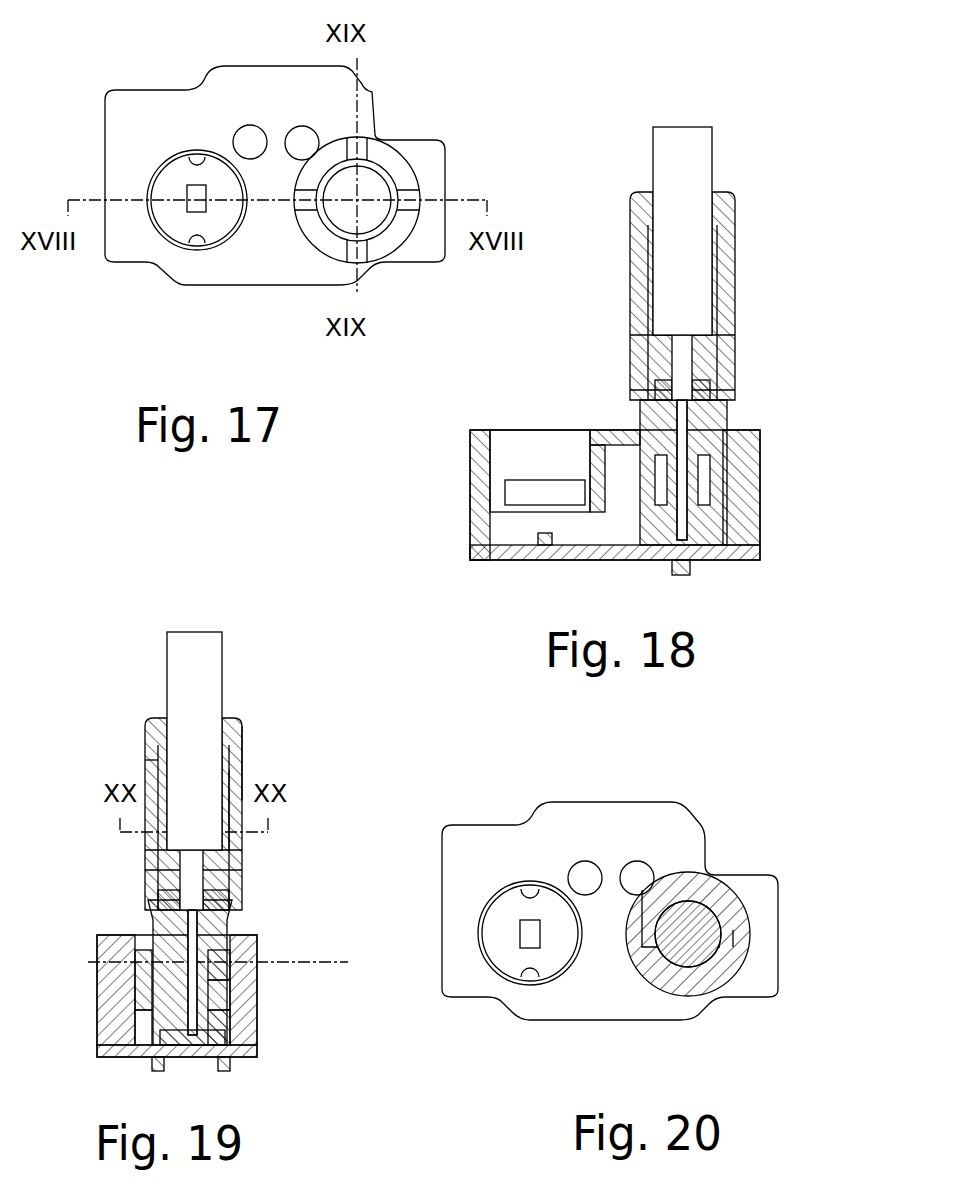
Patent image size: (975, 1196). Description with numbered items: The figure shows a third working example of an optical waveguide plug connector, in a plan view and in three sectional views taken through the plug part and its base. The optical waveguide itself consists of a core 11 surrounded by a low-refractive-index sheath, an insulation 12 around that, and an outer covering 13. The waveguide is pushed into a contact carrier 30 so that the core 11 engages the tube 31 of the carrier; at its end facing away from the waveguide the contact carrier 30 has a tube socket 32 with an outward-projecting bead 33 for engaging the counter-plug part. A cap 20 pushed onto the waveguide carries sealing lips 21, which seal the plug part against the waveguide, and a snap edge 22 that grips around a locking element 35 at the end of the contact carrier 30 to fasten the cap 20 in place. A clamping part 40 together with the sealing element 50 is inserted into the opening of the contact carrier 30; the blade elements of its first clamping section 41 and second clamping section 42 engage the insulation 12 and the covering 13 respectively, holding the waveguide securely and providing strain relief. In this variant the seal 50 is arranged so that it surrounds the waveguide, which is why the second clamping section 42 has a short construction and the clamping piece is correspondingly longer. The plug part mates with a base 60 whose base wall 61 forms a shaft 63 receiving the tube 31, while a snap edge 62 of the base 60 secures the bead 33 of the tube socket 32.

In FIG. 18, the core 11 is at (645, 412).
In FIG. 19, the core 11 is at (245, 940).
In FIG. 18, the insulation 12 is at (680, 365).
In FIG. 19, the insulation 12 is at (205, 885).
In FIG. 20, the insulation 12 is at (668, 900).
In FIG. 18, the covering 13 is at (683, 150).
In FIG. 19, the covering 13 is at (195, 672).
In FIG. 17, the cap 20 is at (377, 147).
In FIG. 18, the cap 20 is at (630, 207).
In FIG. 19, the cap 20 is at (148, 722).
In FIG. 19, the sealing lips 21 is at (244, 735).
In FIG. 19, the snap edge 22 is at (244, 780).
In FIG. 18, the contact carrier 30 is at (630, 282).
In FIG. 19, the contact carrier 30 is at (244, 846).
In FIG. 20, the contact carrier 30 is at (676, 992).
In FIG. 19, the tube 31 is at (105, 1000).
In FIG. 19, the tube socket 32 is at (110, 967).
In FIG. 19, the bead 33 is at (248, 990).
In FIG. 19, the locking element 35 is at (147, 772).
In FIG. 18, the clamping part 40 is at (630, 343).
In FIG. 19, the clamping part 40 is at (150, 900).
In FIG. 20, the clamping part 40 is at (700, 862).
In FIG. 19, the first clamping section 41 is at (147, 848).
In FIG. 19, the second clamping section 42 is at (150, 885).
In FIG. 18, the sealing element 50 is at (730, 396).
In FIG. 19, the sealing element 50 is at (242, 907).
In FIG. 17, the base 60 is at (190, 102).
In FIG. 19, the base 60 is at (100, 1025).
In FIG. 20, the base 60 is at (592, 1005).
In FIG. 19, the base wall 61 is at (250, 995).
In FIG. 19, the snap edge 62 is at (235, 969).
In FIG. 19, the shaft 63 is at (262, 1035).